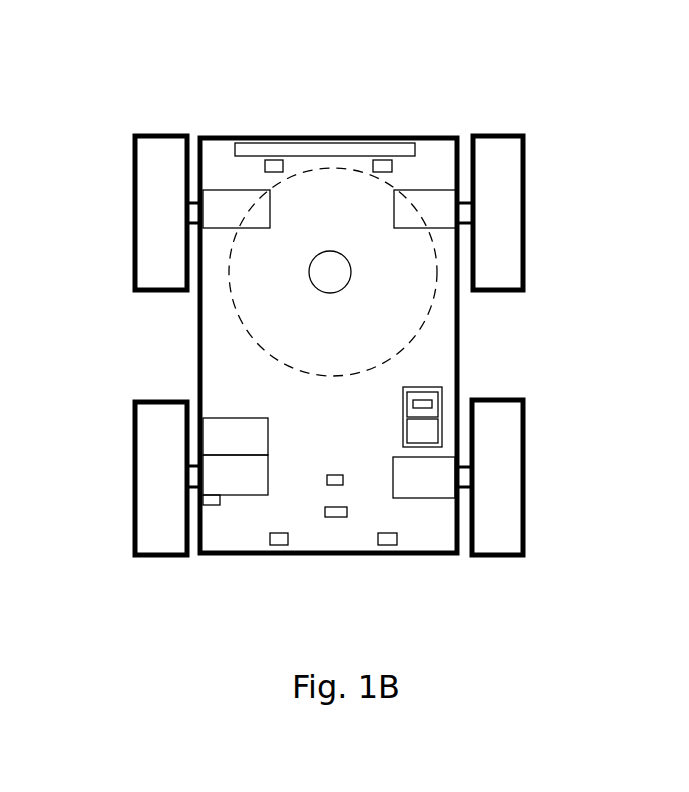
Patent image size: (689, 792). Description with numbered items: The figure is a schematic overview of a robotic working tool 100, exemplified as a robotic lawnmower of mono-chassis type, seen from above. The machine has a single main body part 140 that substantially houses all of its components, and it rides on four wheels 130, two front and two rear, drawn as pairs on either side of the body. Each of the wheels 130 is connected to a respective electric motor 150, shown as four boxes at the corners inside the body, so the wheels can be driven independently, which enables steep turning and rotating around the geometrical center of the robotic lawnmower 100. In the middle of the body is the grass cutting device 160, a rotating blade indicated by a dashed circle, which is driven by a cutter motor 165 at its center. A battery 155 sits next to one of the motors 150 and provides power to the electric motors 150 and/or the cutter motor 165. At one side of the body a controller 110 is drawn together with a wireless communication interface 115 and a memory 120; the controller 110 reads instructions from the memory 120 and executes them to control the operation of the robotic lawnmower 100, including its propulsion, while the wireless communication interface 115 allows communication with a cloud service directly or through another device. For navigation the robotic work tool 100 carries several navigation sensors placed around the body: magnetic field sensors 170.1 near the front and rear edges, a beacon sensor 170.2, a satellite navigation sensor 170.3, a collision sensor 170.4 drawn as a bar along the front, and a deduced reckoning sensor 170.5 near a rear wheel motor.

The robotic working tool 100 is at (194, 136).
The controller 110 is at (437, 397).
The wireless communication interface 115 is at (430, 405).
The memory 120 is at (440, 419).
The wheels 130 is at (158, 135).
The main body part 140 is at (417, 138).
The electric motor 150 is at (329, 344).
The battery 155 is at (235, 436).
The grass cutting device 160 is at (250, 338).
The cutter motor 165 is at (320, 292).
The magnetic field sensor 170.1 is at (375, 160).
The beacon sensor 170.2 is at (337, 517).
The satellite navigation sensor 170.3 is at (336, 475).
The collision sensor 170.4 is at (242, 143).
The deduced reckoning sensor 170.5 is at (218, 505).